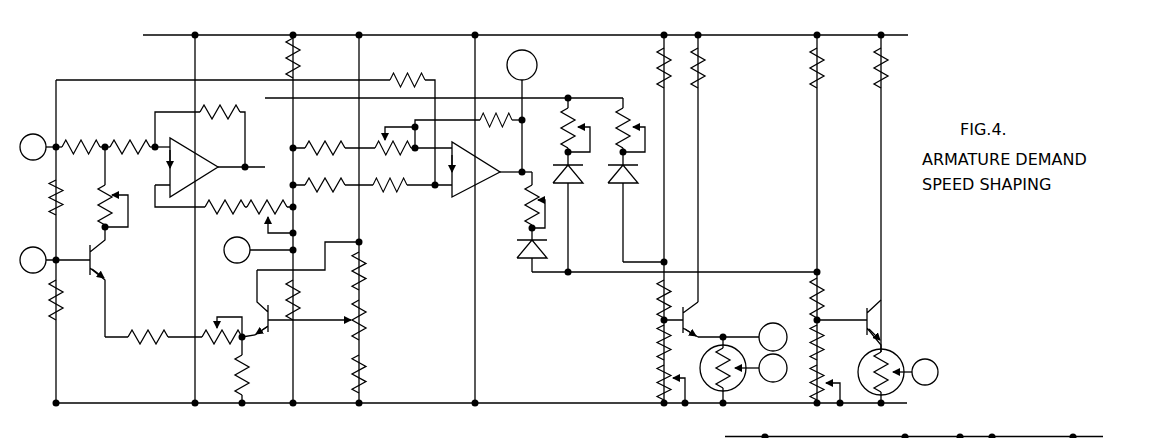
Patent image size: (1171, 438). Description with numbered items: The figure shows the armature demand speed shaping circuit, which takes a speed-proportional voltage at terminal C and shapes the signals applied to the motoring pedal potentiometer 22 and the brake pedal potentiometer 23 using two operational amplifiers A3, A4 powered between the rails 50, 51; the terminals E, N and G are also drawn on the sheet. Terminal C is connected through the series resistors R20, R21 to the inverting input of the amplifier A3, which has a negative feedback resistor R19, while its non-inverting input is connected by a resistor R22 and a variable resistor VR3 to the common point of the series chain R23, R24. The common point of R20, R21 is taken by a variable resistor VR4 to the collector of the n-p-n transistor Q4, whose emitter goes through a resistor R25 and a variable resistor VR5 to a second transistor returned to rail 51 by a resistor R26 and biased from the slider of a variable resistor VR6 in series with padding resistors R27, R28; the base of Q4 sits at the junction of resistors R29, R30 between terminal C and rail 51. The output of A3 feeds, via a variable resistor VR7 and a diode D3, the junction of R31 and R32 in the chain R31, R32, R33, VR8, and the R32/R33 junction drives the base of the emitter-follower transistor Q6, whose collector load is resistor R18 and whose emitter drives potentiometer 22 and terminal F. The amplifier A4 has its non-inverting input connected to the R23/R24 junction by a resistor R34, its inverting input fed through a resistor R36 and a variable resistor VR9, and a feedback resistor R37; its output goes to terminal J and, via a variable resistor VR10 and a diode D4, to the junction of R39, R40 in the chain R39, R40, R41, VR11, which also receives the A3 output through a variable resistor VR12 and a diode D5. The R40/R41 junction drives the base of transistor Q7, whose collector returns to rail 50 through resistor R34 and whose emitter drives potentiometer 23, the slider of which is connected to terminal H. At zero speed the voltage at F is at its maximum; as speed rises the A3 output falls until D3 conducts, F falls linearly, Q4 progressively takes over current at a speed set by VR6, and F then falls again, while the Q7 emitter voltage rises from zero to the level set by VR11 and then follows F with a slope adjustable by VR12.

The rail 50 is at (555, 37).
The rail 51 is at (492, 403).
The motoring pedal potentiometer 22 is at (730, 371).
The brake pedal potentiometer 23 is at (905, 393).
The terminal C is at (41, 147).
The terminal E is at (55, 260).
The terminal N is at (260, 250).
The terminal J is at (522, 65).
The terminal F is at (742, 337).
The terminal G is at (761, 368).
The terminal H is at (915, 372).
The resistor R18 is at (704, 63).
The negative feedback resistor R19 is at (214, 111).
The resistor R20 is at (78, 143).
The resistor R21 is at (140, 159).
The resistor R22 is at (208, 205).
The series resistor R23 is at (290, 66).
The series resistor R24 is at (311, 300).
The resistor R25 is at (166, 346).
The resistor R26 is at (240, 378).
The padding resistor R27 is at (372, 270).
The padding resistor R28 is at (372, 374).
The resistor R29 is at (52, 204).
The resistor R30 is at (62, 306).
The resistor R31 is at (660, 64).
The resistor R32 is at (655, 302).
The resistor R33 is at (655, 340).
The resistor R34 is at (313, 190).
The resistor R36 is at (314, 141).
The feedback resistor R37 is at (497, 127).
The resistor R39 is at (811, 63).
The resistor R40 is at (822, 300).
The resistor R41 is at (822, 352).
The variable resistor VR3 is at (272, 214).
The variable resistor VR4 is at (98, 208).
The variable resistor VR5 is at (212, 325).
The variable resistor VR6 is at (386, 314).
The variable resistor VR7 is at (617, 132).
The variable resistor VR8 is at (655, 380).
The variable resistor VR9 is at (423, 131).
The variable resistor VR10 is at (526, 214).
The variable resistor VR11 is at (804, 385).
The variable resistor VR12 is at (560, 132).
The operational amplifier A3 is at (200, 154).
The operational amplifier A4 is at (468, 190).
The n-p-n transistor Q4 is at (100, 268).
The n-p-n transistor Q6 is at (690, 313).
The transistor Q7 is at (880, 305).
The diode D3 is at (618, 179).
The diode D4 is at (520, 250).
The diode D5 is at (560, 174).